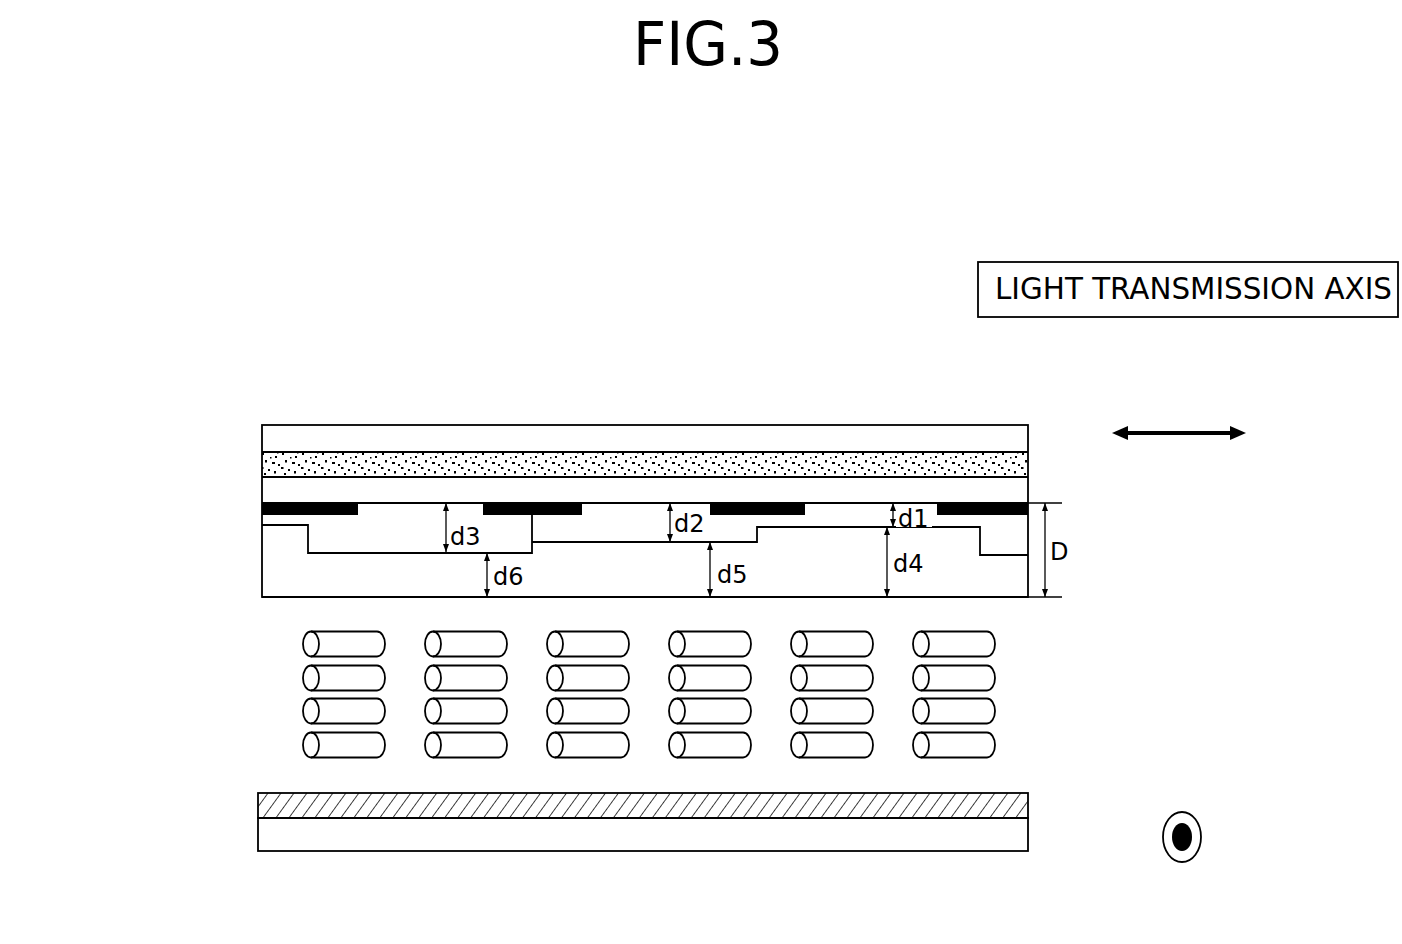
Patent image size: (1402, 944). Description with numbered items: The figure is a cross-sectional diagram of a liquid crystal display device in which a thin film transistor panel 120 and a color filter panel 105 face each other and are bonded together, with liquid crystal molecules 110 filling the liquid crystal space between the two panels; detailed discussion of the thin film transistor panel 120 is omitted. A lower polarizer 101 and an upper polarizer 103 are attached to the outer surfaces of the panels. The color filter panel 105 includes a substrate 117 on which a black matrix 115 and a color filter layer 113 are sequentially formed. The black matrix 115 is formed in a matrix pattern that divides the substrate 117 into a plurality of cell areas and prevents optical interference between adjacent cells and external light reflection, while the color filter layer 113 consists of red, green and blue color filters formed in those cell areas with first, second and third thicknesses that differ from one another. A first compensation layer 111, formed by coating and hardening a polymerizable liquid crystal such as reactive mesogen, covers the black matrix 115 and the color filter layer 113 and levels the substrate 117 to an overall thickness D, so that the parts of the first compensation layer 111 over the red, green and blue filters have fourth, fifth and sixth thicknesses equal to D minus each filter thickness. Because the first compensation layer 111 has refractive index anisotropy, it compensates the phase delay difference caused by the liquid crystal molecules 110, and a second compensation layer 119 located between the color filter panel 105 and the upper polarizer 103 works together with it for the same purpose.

The lower polarizer 101 is at (258, 834).
The upper polarizer 103 is at (262, 433).
The color filter panel 105 is at (147, 598).
The liquid crystal molecules 110 is at (995, 712).
The first compensation layer 111 is at (262, 598).
The color filter layer 113 is at (262, 526).
The black matrix 115 is at (262, 511).
The substrate 117 is at (262, 484).
The second compensation layer 119 is at (262, 461).
The thin film transistor panel 120 is at (258, 803).